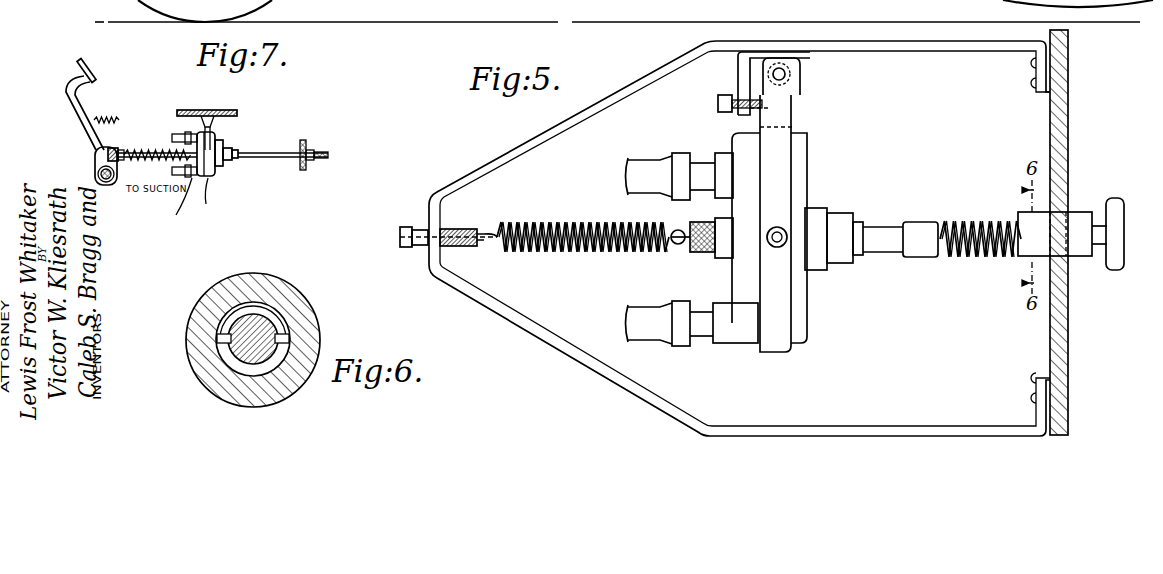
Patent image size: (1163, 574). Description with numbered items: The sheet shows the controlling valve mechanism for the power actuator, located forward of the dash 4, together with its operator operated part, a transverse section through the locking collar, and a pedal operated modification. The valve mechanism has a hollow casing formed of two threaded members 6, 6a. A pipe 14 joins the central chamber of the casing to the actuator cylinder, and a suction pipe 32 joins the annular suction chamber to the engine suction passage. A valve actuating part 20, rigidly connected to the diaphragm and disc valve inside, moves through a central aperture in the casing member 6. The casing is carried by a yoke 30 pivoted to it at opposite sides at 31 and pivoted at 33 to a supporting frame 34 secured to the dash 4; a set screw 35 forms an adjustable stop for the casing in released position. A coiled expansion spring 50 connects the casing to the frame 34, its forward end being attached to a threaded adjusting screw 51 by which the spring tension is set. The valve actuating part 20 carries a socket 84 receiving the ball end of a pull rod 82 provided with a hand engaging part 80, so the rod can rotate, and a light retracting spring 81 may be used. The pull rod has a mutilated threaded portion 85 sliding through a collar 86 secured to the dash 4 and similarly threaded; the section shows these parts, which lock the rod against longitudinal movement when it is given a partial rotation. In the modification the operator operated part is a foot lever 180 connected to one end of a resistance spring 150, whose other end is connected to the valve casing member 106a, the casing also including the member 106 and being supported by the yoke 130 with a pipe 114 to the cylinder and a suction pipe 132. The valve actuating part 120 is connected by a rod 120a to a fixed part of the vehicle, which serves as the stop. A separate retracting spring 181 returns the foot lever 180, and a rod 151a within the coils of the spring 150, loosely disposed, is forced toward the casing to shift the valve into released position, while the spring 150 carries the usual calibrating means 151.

In FIG. 5, the dash or instrument board 4 is at (1060, 116).
In FIG. 5, the casing member 6 is at (800, 154).
In FIG. 5, the casing member 6a is at (738, 141).
In FIG. 5, the pipe 14 is at (628, 165).
In FIG. 5, the valve actuating part 20 is at (884, 253).
In FIG. 5, the yoke 30 is at (782, 146).
In FIG. 5, the pivot 31 is at (783, 231).
In FIG. 5, the suction pipe 32 is at (630, 308).
In FIG. 5, the pivot 33 is at (791, 74).
In FIG. 5, the supporting frame 34 is at (641, 84).
In FIG. 5, the set screw 35 is at (745, 100).
In FIG. 5, the coiled spring 50 is at (566, 224).
In FIG. 5, the threaded adjusting screw 51 is at (455, 230).
In FIG. 5, the hand engaging part 80 is at (1114, 197).
In FIG. 5, the light spring 81 is at (978, 256).
In FIG. 5, the pull rod 82 is at (965, 226).
In FIG. 5, the socket 84 is at (920, 222).
In FIG. 6, the mutilated threaded portion 85 is at (232, 335).
In FIG. 6, the collar 86 is at (282, 302).
In FIG. 7, the casing member 106 is at (212, 176).
In FIG. 7, the valve casing member 106a is at (224, 198).
In FIG. 7, the pipe 114 is at (182, 132).
In FIG. 7, the valve actuating part 120 is at (224, 150).
In FIG. 7, the rod 120a is at (288, 160).
In FIG. 7, the yoke 130 is at (212, 128).
In FIG. 7, the suction pipe 132 is at (182, 208).
In FIG. 7, the resistance spring 150 is at (157, 143).
In FIG. 7, the calibrating means 151 is at (108, 150).
In FIG. 7, the rod 151a is at (157, 165).
In FIG. 7, the foot lever 180 is at (69, 97).
In FIG. 7, the retracting spring 181 is at (107, 115).